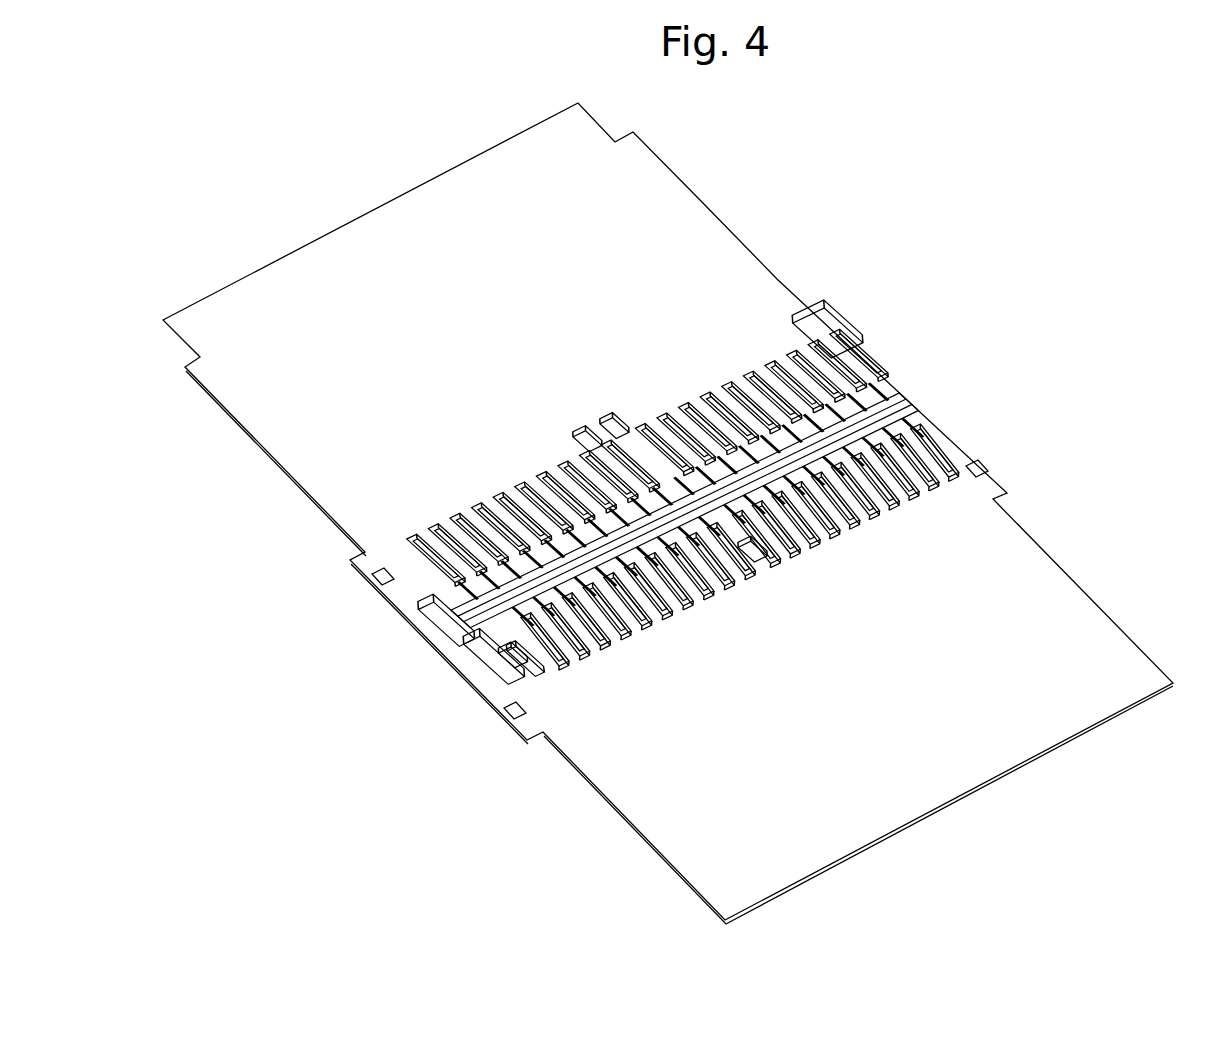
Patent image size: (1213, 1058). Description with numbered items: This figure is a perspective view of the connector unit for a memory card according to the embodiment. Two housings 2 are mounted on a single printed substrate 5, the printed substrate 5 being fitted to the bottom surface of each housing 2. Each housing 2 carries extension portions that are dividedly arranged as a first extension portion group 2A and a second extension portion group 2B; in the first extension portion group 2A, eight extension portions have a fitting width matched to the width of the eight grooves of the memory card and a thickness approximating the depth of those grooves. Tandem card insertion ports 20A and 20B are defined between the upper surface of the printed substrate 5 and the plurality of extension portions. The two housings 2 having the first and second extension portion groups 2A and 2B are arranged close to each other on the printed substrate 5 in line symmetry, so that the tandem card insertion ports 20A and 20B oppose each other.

The housing 2 is at (870, 345).
The first extension portion group 2A is at (775, 282).
The second extension portion group 2B is at (555, 395).
The tandem card insertion port 20A is at (705, 388).
The tandem card insertion port 20B is at (510, 497).
The printed substrate 5 is at (1042, 563).